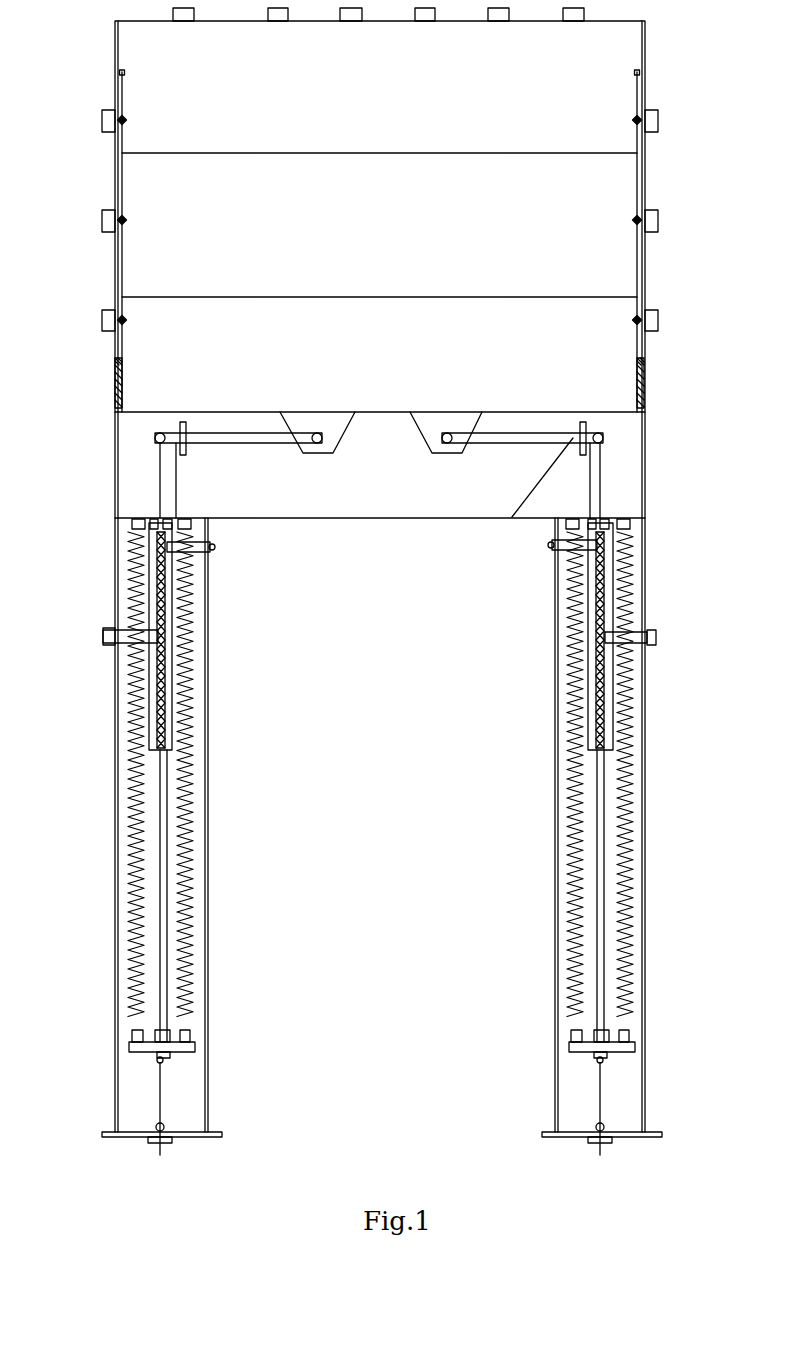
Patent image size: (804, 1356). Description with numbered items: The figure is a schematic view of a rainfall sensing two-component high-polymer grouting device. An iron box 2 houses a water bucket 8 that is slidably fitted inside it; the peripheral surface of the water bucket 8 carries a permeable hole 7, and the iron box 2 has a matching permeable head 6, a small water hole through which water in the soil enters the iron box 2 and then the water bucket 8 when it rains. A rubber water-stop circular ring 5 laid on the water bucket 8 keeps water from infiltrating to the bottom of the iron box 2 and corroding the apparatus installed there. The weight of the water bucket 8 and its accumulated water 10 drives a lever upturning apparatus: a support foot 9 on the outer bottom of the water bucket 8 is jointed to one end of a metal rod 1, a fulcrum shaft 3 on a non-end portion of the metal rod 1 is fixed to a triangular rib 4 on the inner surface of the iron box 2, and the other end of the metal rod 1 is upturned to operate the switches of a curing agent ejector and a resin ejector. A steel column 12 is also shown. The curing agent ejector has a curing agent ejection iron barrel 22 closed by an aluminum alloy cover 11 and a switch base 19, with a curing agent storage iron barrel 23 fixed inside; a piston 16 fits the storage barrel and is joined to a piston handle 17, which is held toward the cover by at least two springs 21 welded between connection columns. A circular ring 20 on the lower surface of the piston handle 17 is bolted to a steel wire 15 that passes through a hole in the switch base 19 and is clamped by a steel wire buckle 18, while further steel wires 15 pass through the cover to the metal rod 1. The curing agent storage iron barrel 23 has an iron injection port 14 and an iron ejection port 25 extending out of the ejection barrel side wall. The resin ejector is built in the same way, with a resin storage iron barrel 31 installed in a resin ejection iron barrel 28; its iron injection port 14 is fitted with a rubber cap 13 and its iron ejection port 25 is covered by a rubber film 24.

The metal rod 1 is at (162, 435).
The iron box 2 is at (115, 365).
The fulcrum shaft 3 is at (190, 447).
The triangular rib 4 is at (243, 510).
The rubber water-stop circular ring 5 is at (645, 45).
The permeable head 6 is at (658, 115).
The permeable hole 7 is at (637, 215).
The water bucket 8 is at (637, 272).
The support foot 9 is at (477, 420).
The accumulated water 10 is at (310, 152).
The aluminum alloy cover 11 is at (138, 524).
The steel column 12 is at (137, 528).
The rubber cap 13 is at (108, 628).
The iron injection port 14 is at (105, 638).
The steel wire 15 is at (157, 698).
The piston 16 is at (157, 855).
The piston handle 17 is at (158, 1062).
The steel wire buckle 18 is at (172, 1142).
The switch base 19 is at (222, 1135).
The circular ring 20 is at (168, 1058).
The spring 21 is at (195, 790).
The curing agent ejection iron barrel 22 is at (207, 760).
The curing agent storage iron barrel 23 is at (165, 630).
The rubber film 24 is at (215, 552).
The iron ejection port 25 is at (215, 548).
The resin ejection iron barrel 28 is at (647, 893).
The resin storage iron barrel 31 is at (612, 682).